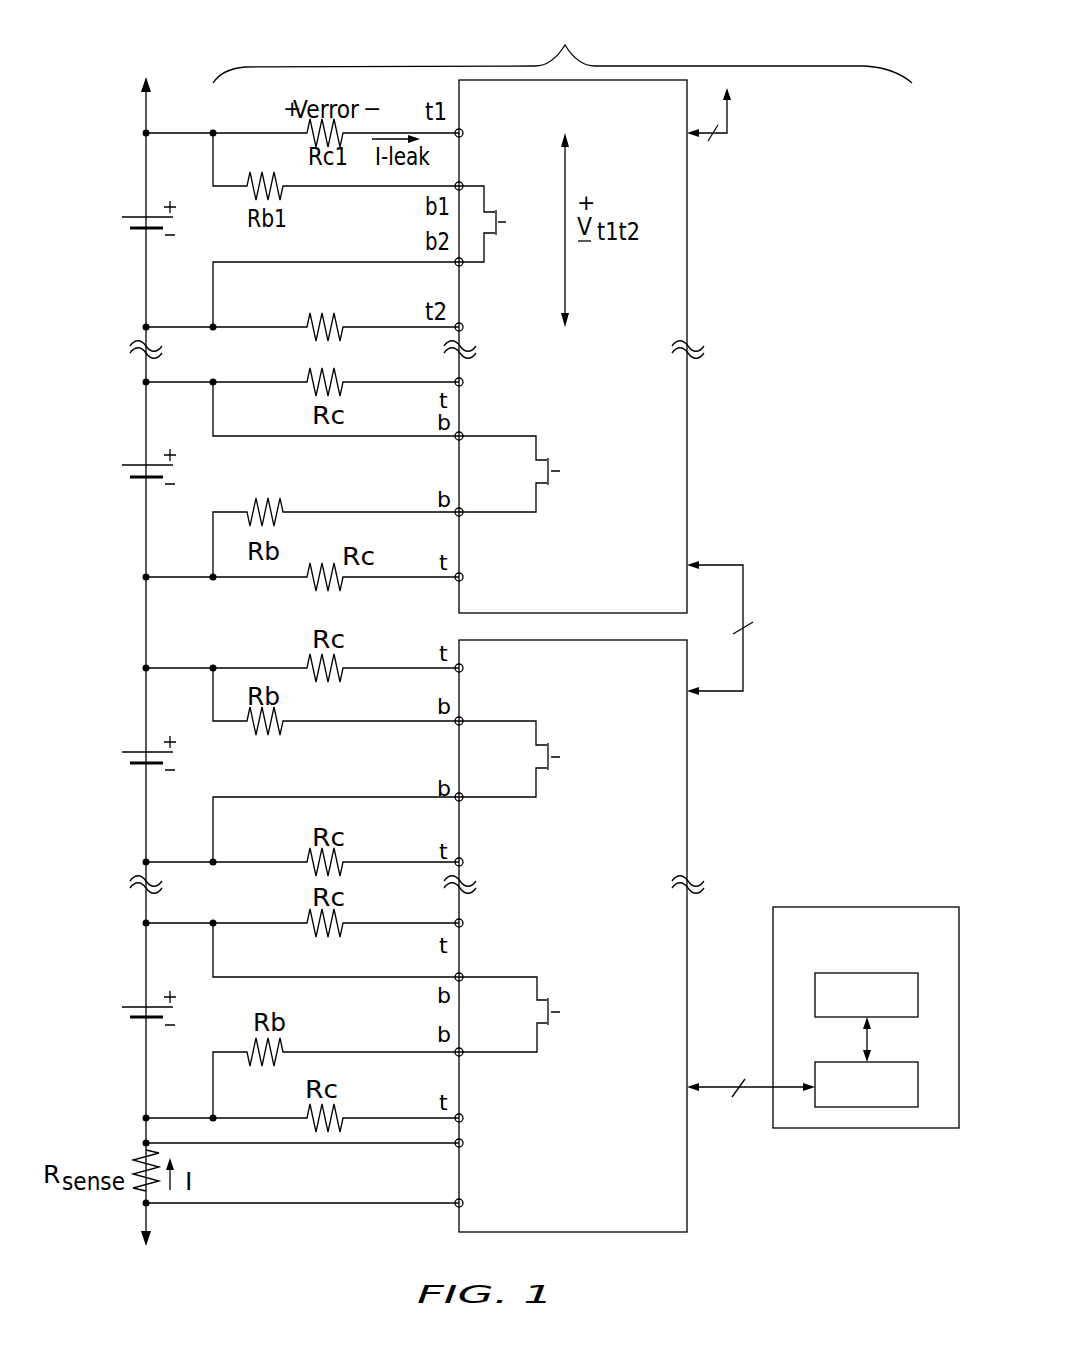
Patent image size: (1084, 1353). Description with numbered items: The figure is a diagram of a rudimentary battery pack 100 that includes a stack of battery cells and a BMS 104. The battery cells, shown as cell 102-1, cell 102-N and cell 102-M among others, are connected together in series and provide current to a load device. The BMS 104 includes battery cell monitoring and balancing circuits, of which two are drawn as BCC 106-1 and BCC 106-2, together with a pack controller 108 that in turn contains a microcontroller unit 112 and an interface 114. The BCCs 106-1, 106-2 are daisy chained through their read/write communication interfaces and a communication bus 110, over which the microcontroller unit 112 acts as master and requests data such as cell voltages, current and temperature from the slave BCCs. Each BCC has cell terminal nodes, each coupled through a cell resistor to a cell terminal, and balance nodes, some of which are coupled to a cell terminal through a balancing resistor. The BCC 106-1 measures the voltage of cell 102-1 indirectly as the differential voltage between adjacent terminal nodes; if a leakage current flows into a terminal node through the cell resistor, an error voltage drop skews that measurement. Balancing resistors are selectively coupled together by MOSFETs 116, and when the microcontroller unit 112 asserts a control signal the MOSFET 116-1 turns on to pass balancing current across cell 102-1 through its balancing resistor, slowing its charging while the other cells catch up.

The battery pack 100 is at (153, 27).
The battery cell 102-1 is at (137, 216).
The battery cell 102-N is at (137, 464).
The battery cell 102-M is at (137, 1006).
The BMS 104 is at (562, 50).
The battery cell monitoring and balancing circuit 106-1 is at (687, 237).
The battery cell monitoring and balancing circuit 106-2 is at (687, 800).
The pack controller 108 is at (868, 893).
The communication bus 110 is at (728, 117).
The microcontroller unit 112 is at (833, 1019).
The interface 114 is at (897, 1050).
The MOSFET 116 is at (543, 483).
The MOSFET 116-1 is at (489, 230).